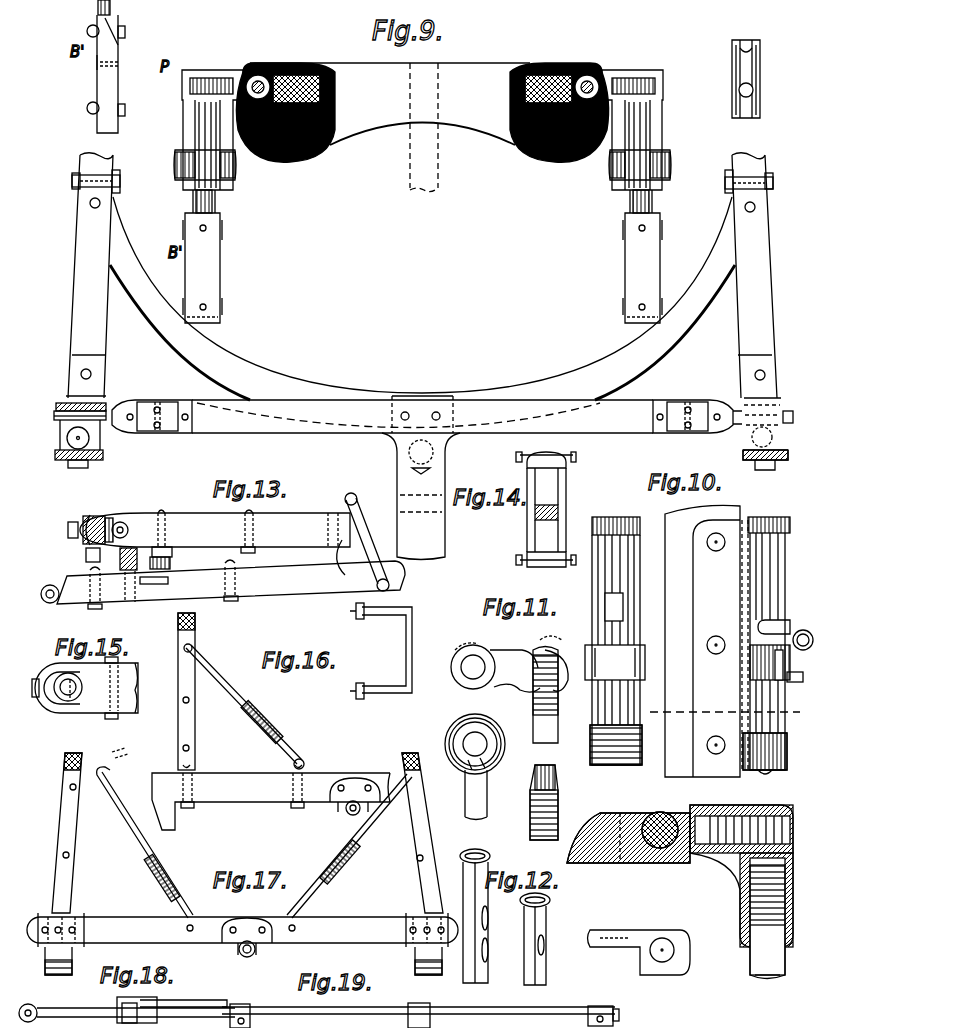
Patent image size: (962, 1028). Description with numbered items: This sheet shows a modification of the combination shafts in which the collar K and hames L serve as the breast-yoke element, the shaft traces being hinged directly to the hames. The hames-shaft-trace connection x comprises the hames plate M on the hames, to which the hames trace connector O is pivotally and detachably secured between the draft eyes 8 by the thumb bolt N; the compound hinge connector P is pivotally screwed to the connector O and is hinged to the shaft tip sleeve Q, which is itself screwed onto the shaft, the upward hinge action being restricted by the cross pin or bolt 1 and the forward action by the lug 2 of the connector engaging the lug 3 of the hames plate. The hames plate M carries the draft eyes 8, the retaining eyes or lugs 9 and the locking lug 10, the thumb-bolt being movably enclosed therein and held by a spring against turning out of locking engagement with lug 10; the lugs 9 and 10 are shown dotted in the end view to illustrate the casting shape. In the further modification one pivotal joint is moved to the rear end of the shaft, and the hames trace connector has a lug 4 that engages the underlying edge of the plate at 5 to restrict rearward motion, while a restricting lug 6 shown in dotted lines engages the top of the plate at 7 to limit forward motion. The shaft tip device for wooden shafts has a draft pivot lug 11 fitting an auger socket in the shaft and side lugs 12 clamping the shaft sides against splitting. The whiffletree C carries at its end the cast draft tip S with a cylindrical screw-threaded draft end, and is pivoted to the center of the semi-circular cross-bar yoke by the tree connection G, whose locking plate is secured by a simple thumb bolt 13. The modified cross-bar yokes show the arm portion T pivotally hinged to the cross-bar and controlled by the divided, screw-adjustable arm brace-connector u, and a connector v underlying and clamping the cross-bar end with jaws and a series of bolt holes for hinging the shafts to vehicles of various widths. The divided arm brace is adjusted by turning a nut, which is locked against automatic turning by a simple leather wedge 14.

In FIG. 9, the cross pin or bolt 1 is at (190, 120).
In FIG. 9, the lug of connector P 2 is at (248, 78).
In FIG. 10, the lug of the hames plate 3 is at (797, 685).
In FIG. 11, the lug 4 is at (469, 705).
In FIG. 10, the underlying edge of the hames plate 5 is at (619, 676).
In FIG. 11, the restricting lug 6 is at (473, 658).
In FIG. 10, the top of the hames plate 7 is at (574, 711).
In FIG. 10, the draft eyes 8 is at (803, 695).
In FIG. 10, the retaining eyes or lugs 9 is at (692, 519).
In FIG. 10, the locking lug 10 is at (655, 628).
In FIG. 9, the draft pivot lug 11 is at (121, 63).
In FIG. 9, the side lugs 12 is at (116, 66).
In FIG. 9, the thumb bolt 13 is at (421, 506).
In FIG. 18, the wedge 14 is at (127, 1008).
In FIG. 9, the collar K is at (422, 116).
In FIG. 9, the hames L is at (300, 76).
In FIG. 9, the hames plate M is at (280, 74).
In FIG. 10, the hames plate M is at (765, 506).
In FIG. 9, the bolt N is at (422, 76).
In FIG. 9, the hames trace connector O is at (260, 76).
In FIG. 9, the shaft tip sleeve Q is at (193, 193).
In FIG. 9, the whiffletree C is at (422, 425).
In FIG. 9, the whiffletree and cross-bar-yoke connection G is at (411, 435).
In FIG. 9, the draft tip S is at (152, 426).
In FIG. 16, the arm portion T is at (173, 691).
In FIG. 16, the arm brace-connector u is at (244, 706).
In FIG. 17, the connector v is at (397, 958).
In FIG. 9, the hames-shaft-trace connection x is at (629, 57).